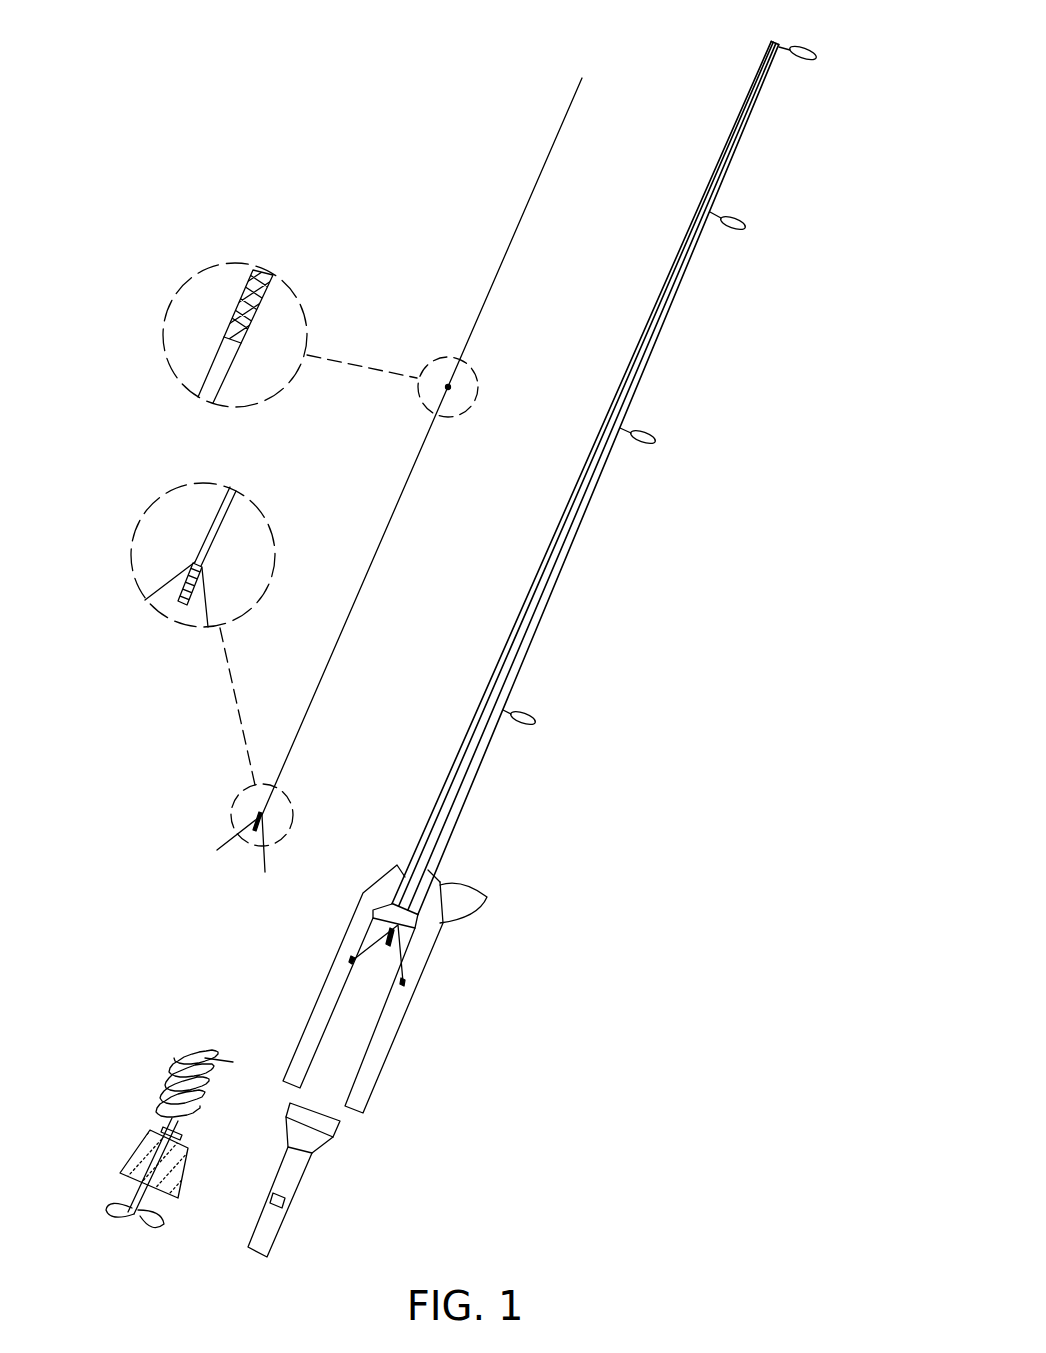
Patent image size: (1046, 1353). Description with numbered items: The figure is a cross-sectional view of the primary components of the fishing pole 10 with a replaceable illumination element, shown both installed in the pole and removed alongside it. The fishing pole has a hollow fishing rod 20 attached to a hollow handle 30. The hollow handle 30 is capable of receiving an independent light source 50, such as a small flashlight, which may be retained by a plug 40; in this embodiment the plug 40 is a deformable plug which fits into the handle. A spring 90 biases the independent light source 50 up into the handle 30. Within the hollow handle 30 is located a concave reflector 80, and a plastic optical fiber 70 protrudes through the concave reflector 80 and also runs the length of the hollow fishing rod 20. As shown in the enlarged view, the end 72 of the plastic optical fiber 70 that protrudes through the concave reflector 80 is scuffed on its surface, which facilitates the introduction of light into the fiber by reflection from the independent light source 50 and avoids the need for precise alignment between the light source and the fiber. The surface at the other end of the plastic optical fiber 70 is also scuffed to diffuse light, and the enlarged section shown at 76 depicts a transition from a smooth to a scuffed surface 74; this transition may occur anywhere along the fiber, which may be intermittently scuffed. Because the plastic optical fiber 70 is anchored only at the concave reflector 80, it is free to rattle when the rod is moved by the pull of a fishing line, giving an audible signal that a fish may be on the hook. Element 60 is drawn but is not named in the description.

The fishing pole 10 is at (628, 788).
The hollow fishing rod 20 is at (462, 808).
The hollow handle 30 is at (403, 1022).
The plug 40 is at (133, 1148).
The independent light source 50 is at (297, 1192).
The hook 60 is at (333, 1088).
The plastic optical fiber 70 is at (393, 517).
The end of plastic optical fiber 72 is at (178, 605).
The scuffed surface 74 is at (246, 310).
The enlarged section 76 is at (448, 387).
The concave reflector 80 is at (205, 590).
The spring 90 is at (188, 1047).